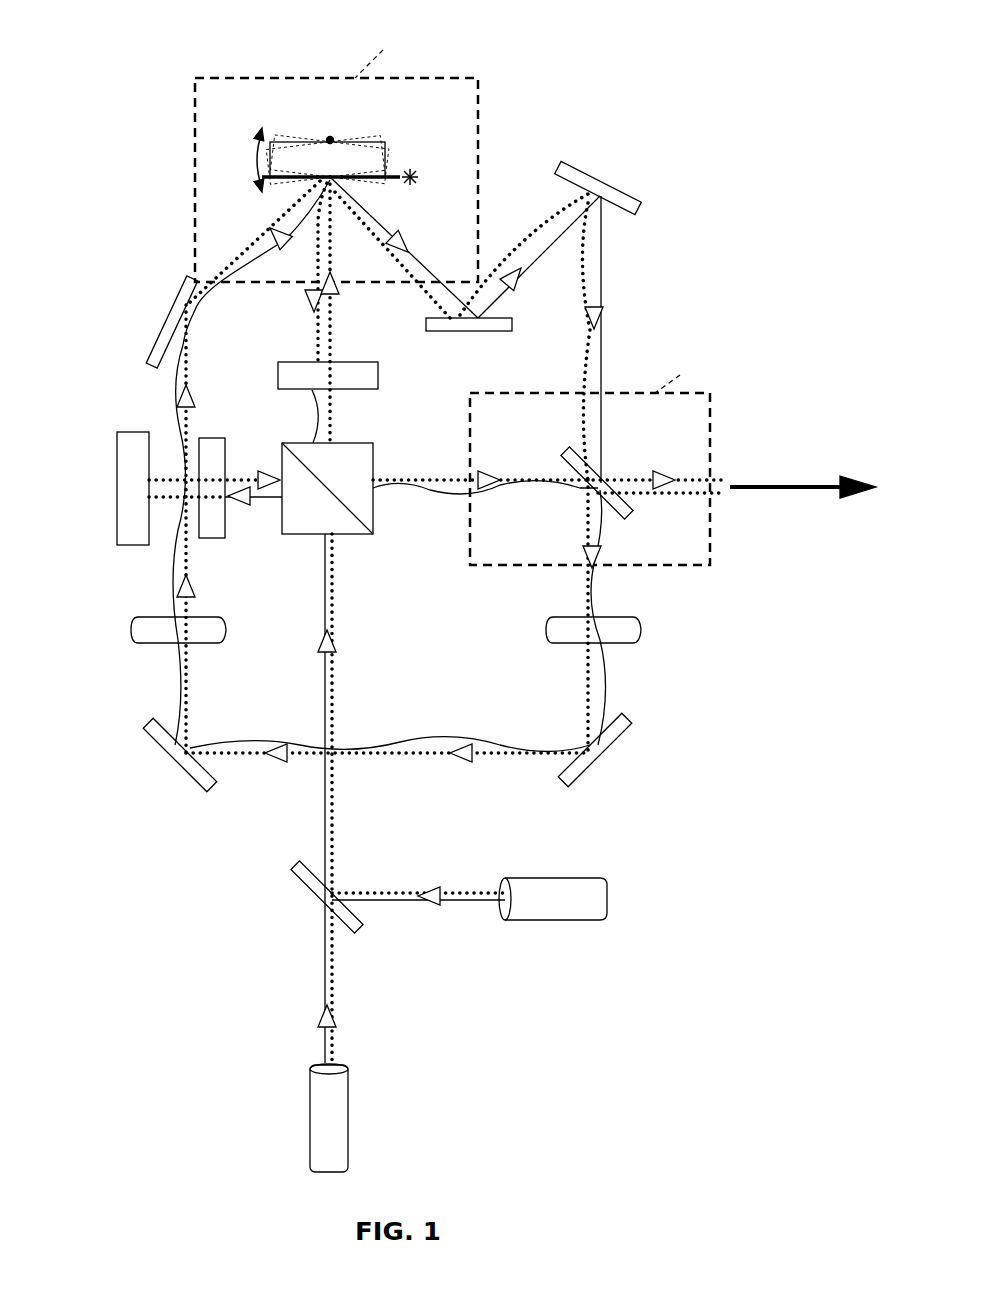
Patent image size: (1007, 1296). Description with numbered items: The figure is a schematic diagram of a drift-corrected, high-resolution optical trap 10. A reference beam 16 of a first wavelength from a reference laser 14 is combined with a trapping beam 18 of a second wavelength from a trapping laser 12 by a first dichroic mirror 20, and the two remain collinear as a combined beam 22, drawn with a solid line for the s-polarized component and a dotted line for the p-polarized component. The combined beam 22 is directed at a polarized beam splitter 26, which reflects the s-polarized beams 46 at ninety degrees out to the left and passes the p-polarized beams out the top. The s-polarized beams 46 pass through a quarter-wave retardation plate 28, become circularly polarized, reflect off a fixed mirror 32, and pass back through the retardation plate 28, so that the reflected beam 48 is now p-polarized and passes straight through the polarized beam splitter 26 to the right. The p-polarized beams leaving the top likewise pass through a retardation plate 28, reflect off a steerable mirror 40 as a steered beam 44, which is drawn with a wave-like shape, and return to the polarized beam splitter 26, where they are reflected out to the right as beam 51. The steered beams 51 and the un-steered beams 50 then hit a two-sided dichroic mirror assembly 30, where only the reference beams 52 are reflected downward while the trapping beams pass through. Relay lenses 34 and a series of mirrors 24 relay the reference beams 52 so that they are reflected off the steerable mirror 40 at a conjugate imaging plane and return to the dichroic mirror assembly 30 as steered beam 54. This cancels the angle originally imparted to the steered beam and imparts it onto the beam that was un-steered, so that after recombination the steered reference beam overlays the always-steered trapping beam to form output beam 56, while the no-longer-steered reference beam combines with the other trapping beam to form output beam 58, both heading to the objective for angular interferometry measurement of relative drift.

The drift-corrected, high-resolution optical trap 10 is at (143, 38).
The trapping laser 12 is at (312, 1078).
The reference laser 14 is at (535, 878).
The reference beam 16 is at (412, 893).
The trapping beam 18 is at (320, 1000).
The first dichroic mirror 20 is at (300, 870).
The combined beam 22 is at (330, 712).
The mirrors 24 is at (641, 193).
The polarized beam splitter 26 is at (368, 445).
The λ/4 retardation plate 28 is at (348, 362).
The two-sided dichroic mirror assembly 30 is at (610, 470).
The fixed mirror 32 is at (118, 432).
The relay lenses 34 is at (212, 645).
The steerable mirror 40 is at (362, 158).
The steered beam 44 is at (320, 328).
The s-polarized beams 46 is at (272, 500).
The reflected beam 48 is at (238, 478).
The un-steered beams 50 is at (448, 480).
The steered beams 51 is at (405, 492).
The reference beams 52 is at (242, 262).
The steered beam 54 is at (412, 250).
The output beam 56 is at (725, 478).
The output beam 58 is at (722, 496).